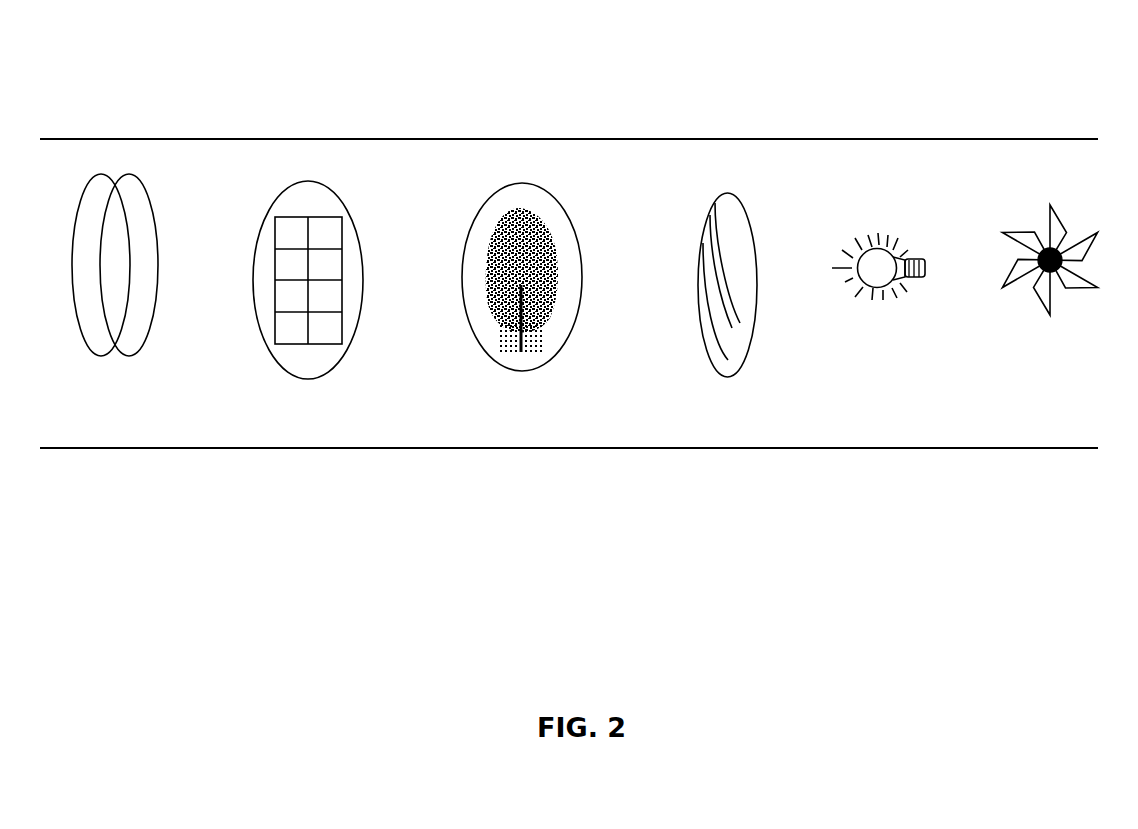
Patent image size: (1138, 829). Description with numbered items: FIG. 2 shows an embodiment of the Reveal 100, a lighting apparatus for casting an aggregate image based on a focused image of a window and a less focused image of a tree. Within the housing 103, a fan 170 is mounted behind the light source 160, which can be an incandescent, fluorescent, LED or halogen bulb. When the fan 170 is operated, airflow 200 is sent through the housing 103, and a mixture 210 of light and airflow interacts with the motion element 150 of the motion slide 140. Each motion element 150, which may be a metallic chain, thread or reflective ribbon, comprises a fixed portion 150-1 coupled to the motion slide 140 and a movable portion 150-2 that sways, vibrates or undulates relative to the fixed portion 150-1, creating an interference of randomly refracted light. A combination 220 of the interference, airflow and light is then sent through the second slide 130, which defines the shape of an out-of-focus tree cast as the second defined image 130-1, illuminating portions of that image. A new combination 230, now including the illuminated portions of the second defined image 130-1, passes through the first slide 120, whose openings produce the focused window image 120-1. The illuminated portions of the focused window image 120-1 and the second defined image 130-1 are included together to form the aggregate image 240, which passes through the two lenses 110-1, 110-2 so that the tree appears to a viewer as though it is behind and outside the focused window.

The Reveal 100 is at (173, 66).
The housing 103 is at (637, 130).
The lens 110-1 is at (86, 357).
The lens 110-2 is at (117, 360).
The first slide 120 is at (287, 374).
The focused window image 120-1 is at (338, 214).
The second slide 130 is at (493, 362).
The second defined image 130-1 is at (545, 230).
The motion slide 140 is at (697, 340).
The motion element 150 is at (731, 333).
The fixed portion 150-1 is at (716, 197).
The movable portion 150-2 is at (733, 254).
The light source 160 is at (883, 296).
The fan 170 is at (1021, 222).
The airflow 200 is at (992, 253).
The mixture of light and airflow 210 is at (823, 258).
The combination of interference, airflow and light 220 is at (657, 262).
The new combination of interference, airflow and light 230 is at (433, 265).
The aggregate image 240 is at (220, 262).